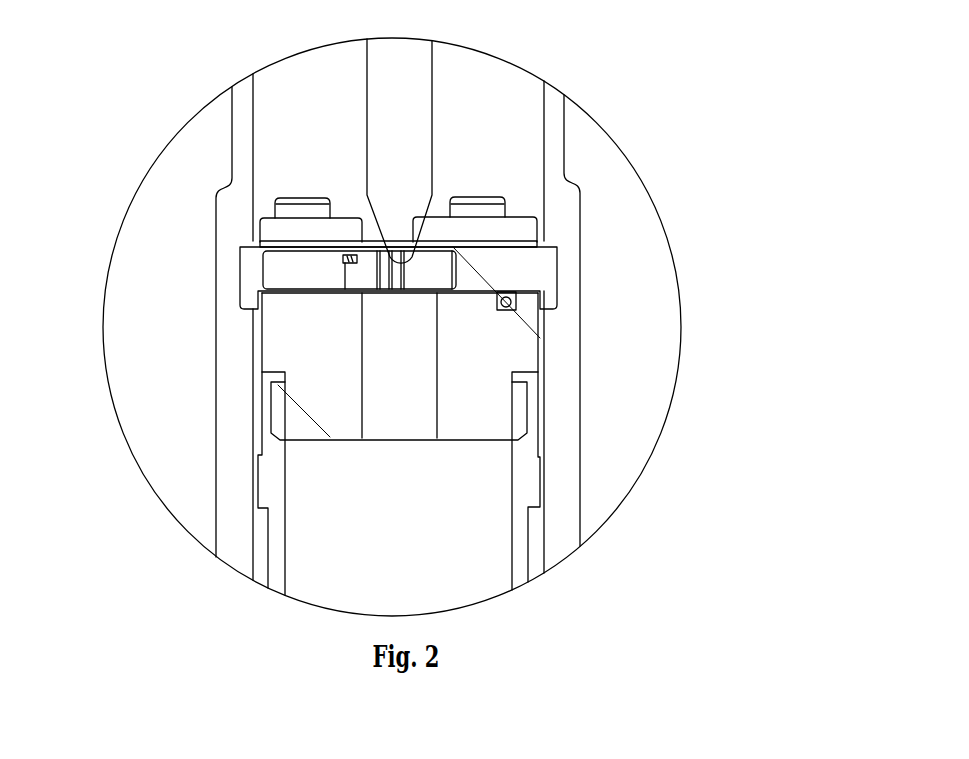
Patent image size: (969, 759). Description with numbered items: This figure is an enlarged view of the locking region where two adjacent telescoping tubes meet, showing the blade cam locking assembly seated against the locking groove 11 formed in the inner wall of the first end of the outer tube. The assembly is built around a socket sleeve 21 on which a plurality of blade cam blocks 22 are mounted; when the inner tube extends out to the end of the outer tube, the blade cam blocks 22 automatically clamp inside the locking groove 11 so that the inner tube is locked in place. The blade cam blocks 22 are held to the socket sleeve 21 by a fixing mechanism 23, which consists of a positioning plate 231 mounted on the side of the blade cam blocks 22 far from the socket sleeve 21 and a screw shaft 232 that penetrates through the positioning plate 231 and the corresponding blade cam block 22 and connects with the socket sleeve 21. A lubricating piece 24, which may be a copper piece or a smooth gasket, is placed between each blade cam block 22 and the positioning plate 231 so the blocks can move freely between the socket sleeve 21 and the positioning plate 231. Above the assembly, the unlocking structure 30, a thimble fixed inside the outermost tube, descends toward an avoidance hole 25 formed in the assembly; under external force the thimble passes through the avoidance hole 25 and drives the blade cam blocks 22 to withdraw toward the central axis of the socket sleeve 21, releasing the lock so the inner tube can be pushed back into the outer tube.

The locking groove 11 is at (245, 273).
The socket sleeve 21 is at (505, 345).
The blade cam block 22 is at (310, 268).
The fixing mechanism 23 is at (236, 123).
The positioning plate 231 is at (282, 232).
The screw shaft 232 is at (300, 213).
The lubricating piece 24 is at (357, 242).
The avoidance hole 25 is at (427, 230).
The unlocking structure 30 is at (408, 142).